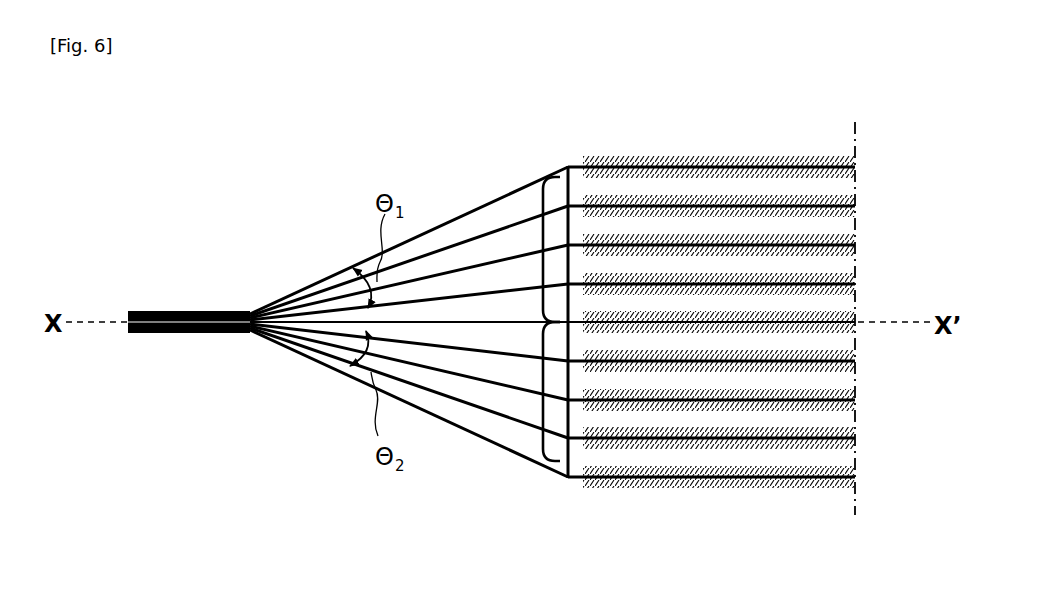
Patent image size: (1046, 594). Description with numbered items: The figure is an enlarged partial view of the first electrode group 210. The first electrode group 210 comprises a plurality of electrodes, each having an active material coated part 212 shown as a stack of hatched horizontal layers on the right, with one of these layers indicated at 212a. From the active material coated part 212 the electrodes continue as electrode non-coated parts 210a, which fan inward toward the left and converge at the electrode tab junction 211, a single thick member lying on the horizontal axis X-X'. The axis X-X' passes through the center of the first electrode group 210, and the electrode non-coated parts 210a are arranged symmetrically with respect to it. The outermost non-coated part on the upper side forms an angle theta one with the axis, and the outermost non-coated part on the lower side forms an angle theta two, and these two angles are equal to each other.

The electrode tab junction 211 is at (205, 322).
The first electrode group 210 is at (657, 329).
The electrode non-coated parts 210a is at (525, 330).
The active material coated part 212 is at (711, 283).
The first hatched layer 212a is at (596, 156).